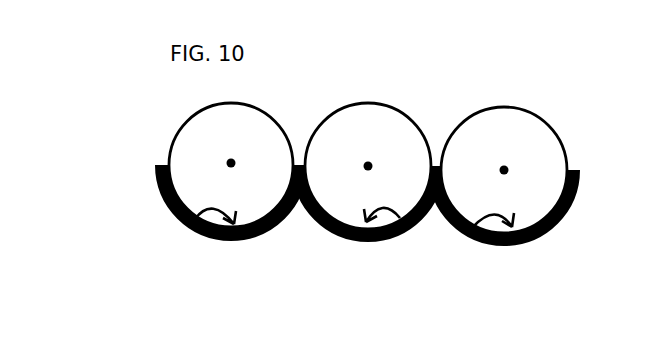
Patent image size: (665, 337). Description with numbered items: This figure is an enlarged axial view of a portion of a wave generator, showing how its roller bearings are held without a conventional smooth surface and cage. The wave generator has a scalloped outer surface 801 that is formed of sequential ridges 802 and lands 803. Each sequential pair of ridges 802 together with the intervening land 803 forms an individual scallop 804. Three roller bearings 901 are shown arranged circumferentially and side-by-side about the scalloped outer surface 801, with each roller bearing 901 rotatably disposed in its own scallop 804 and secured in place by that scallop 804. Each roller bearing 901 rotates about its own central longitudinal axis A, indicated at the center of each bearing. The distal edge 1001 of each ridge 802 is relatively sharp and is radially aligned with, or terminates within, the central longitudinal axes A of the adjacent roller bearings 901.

The scalloped outer surface 801 is at (165, 198).
The ridge 802 is at (163, 172).
The land 803 is at (335, 238).
The scallop 804 is at (188, 221).
The roller bearing 901 is at (192, 150).
The distal edge 1001 is at (161, 170).
The central longitudinal axis A is at (231, 163).